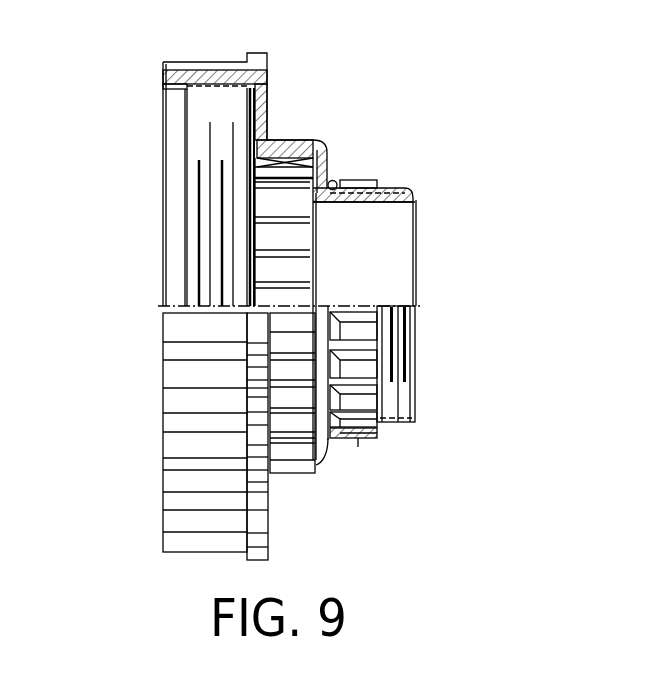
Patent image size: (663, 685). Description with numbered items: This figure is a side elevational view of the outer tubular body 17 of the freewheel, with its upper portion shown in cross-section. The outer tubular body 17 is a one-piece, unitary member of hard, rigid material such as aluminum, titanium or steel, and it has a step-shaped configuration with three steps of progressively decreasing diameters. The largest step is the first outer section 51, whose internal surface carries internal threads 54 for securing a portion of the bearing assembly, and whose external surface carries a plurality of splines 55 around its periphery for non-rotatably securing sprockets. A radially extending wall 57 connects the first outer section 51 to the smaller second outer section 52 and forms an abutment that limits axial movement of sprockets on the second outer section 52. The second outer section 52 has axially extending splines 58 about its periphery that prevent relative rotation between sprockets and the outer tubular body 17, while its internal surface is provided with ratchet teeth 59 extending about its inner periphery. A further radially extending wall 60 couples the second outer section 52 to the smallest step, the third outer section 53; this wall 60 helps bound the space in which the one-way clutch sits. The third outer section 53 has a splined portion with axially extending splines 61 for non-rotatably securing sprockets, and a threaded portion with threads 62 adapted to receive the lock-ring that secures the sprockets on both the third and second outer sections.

The outer tubular body 17 is at (438, 100).
The first outer section 51 is at (228, 49).
The second outer section 52 is at (294, 116).
The third outer section 53 is at (394, 172).
The internal threads 54 is at (247, 92).
The splines 55 is at (196, 396).
The radially extending wall 57 is at (255, 142).
The axially extending splines 58 is at (297, 477).
The ratchet teeth 59 is at (300, 213).
The radially extending wall 60 is at (335, 145).
The axially extending splines 61 is at (357, 438).
The threads 62 is at (417, 357).